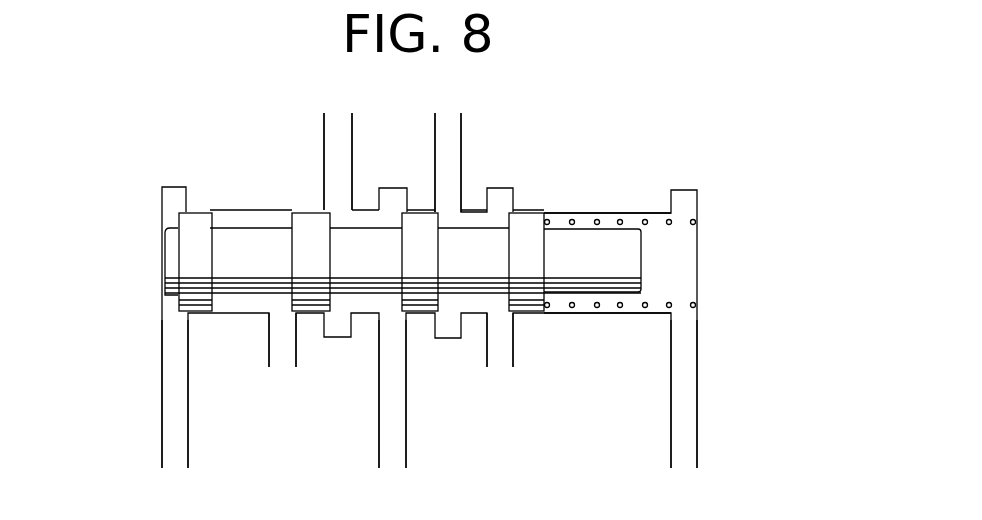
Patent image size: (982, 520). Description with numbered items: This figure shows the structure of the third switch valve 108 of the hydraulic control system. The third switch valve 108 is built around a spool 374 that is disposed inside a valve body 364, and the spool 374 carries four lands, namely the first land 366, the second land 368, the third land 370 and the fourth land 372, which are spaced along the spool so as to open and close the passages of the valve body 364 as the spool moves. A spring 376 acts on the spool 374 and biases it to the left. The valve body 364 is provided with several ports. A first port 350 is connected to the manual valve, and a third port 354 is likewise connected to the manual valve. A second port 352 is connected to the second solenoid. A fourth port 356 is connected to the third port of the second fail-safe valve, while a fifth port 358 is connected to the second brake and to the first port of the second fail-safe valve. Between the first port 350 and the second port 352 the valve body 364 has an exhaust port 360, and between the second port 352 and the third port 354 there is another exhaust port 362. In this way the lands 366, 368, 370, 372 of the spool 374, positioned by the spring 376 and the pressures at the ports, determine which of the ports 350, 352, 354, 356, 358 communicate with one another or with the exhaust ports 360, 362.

The third switch valve 108 is at (738, 253).
The first port 350 is at (173, 325).
The second port 352 is at (390, 325).
The third port 354 is at (682, 320).
The fourth port 356 is at (337, 198).
The fifth port 358 is at (450, 197).
The exhaust port 360 is at (278, 320).
The exhaust port 362 is at (497, 322).
The valve body 364 is at (642, 200).
The first land 366 is at (196, 226).
The second land 368 is at (310, 227).
The third land 370 is at (428, 313).
The fourth land 372 is at (527, 228).
The spool 374 is at (153, 253).
The spring 376 is at (622, 310).